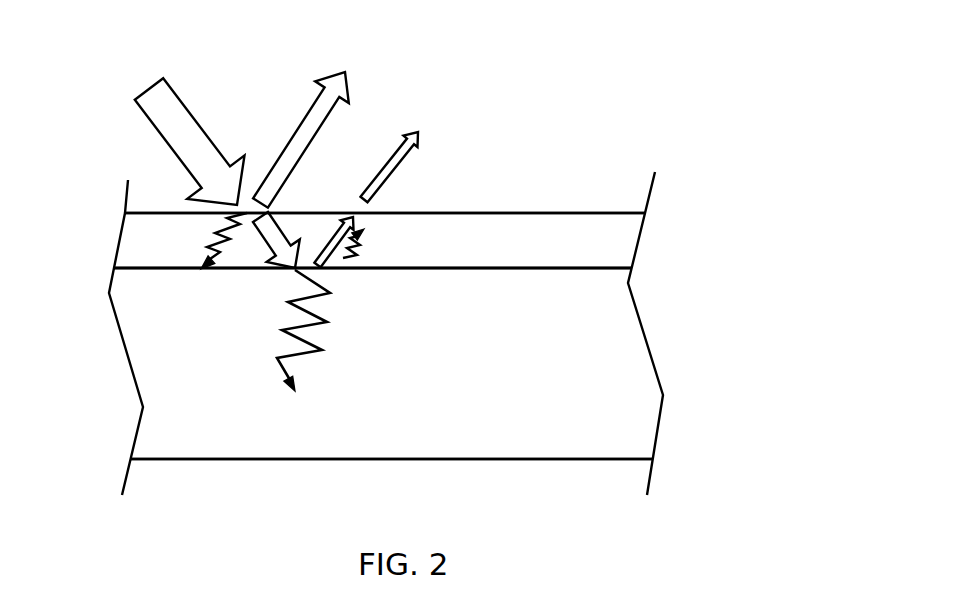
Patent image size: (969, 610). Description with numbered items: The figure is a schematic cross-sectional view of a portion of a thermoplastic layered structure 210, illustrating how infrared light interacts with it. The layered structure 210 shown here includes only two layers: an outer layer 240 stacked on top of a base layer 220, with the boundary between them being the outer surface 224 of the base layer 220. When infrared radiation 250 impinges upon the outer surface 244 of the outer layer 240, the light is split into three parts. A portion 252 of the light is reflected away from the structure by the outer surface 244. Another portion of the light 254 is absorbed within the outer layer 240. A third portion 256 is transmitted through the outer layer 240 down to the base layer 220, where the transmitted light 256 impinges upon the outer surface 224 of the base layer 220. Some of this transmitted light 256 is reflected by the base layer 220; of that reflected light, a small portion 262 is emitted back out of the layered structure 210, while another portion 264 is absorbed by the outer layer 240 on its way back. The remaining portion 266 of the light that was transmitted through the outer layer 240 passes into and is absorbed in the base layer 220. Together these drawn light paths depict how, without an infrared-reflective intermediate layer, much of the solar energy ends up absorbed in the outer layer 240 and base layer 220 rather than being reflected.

The layered structure 210 is at (656, 98).
The base layer 220 is at (584, 369).
The outer surface of base layer 224 is at (494, 268).
The outer layer 240 is at (580, 254).
The outer surface of outer layer 244 is at (610, 212).
The infrared radiation 250 is at (160, 115).
The reflected portion of light 252 is at (297, 130).
The absorbed portion of light 254 is at (210, 228).
The transmitted portion of light 256 is at (273, 237).
The emitted portion of reflected light 262 is at (400, 160).
The absorbed portion of reflected light 264 is at (350, 256).
The remaining portion of transmitted light 266 is at (327, 322).